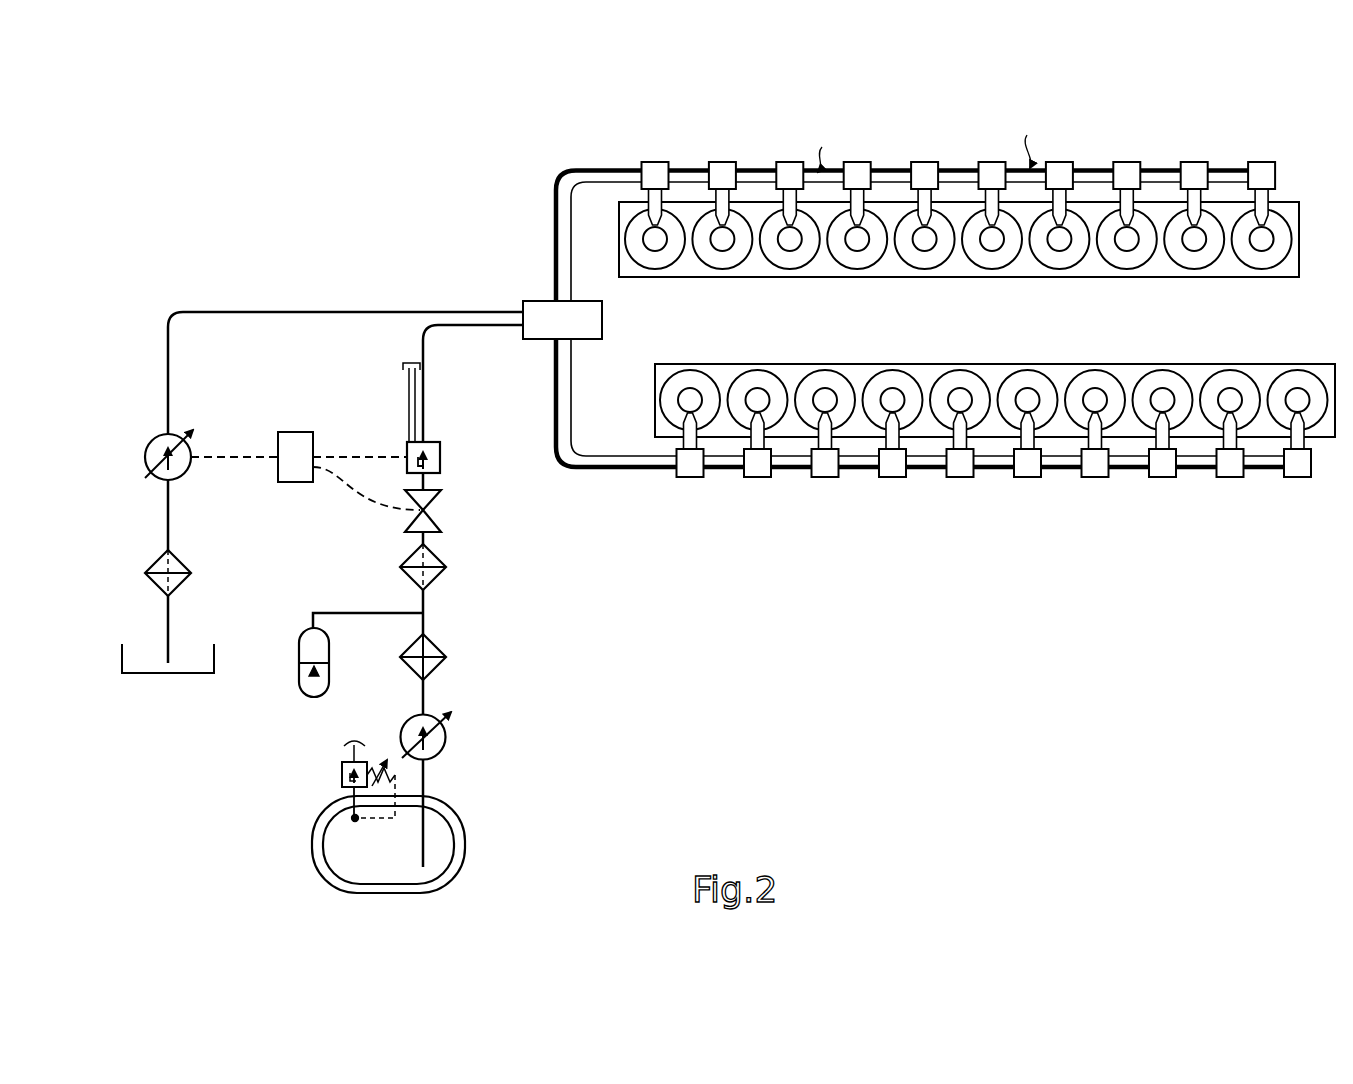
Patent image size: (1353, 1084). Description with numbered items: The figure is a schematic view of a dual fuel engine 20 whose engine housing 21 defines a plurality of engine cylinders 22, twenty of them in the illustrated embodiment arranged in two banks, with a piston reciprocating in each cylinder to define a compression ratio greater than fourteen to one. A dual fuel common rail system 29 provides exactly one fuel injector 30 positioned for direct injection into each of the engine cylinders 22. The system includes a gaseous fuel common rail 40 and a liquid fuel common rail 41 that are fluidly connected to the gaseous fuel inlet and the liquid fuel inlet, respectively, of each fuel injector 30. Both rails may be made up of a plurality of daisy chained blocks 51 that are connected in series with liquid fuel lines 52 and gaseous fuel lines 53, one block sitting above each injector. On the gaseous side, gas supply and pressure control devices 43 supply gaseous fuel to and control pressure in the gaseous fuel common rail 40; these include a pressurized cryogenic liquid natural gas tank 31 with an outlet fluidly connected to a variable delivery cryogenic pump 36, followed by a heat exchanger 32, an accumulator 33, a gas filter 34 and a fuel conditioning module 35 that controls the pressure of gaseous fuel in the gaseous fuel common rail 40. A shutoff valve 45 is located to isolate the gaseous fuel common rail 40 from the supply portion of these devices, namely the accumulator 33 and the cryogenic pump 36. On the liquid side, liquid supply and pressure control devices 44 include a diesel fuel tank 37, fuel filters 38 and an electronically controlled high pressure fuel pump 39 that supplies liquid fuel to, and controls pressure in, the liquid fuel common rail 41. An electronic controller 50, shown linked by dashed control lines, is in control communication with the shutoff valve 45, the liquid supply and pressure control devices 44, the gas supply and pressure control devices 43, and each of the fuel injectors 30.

The dual fuel engine 20 is at (967, 332).
The engine housing 21 is at (697, 364).
The engine cylinders 22 is at (770, 263).
The dual fuel common rail system 29 is at (951, 134).
The fuel injector 30 is at (868, 244).
The pressurized cryogenic liquid natural gas tank 31 is at (465, 828).
The heat exchanger 32 is at (446, 656).
The accumulator 33 is at (329, 650).
The gas filter 34 is at (446, 564).
The fuel conditioning module 35 is at (440, 458).
The variable delivery cryogenic pump 36 is at (447, 731).
The diesel fuel tank 37 is at (214, 650).
The fuel filters 38 is at (146, 570).
The electronically controlled high pressure fuel pump 39 is at (146, 453).
The gaseous fuel common rail 40 is at (925, 495).
The liquid fuel common rail 41 is at (1062, 508).
The gas supply and pressure control devices 43 is at (291, 628).
The liquid supply and pressure control devices 44 is at (130, 433).
The shutoff valve 45 is at (441, 497).
The electronic controller 50 is at (293, 432).
The daisy chained blocks 51 is at (716, 162).
The liquid fuel lines 52 is at (677, 167).
The gaseous fuel lines 53 is at (683, 170).